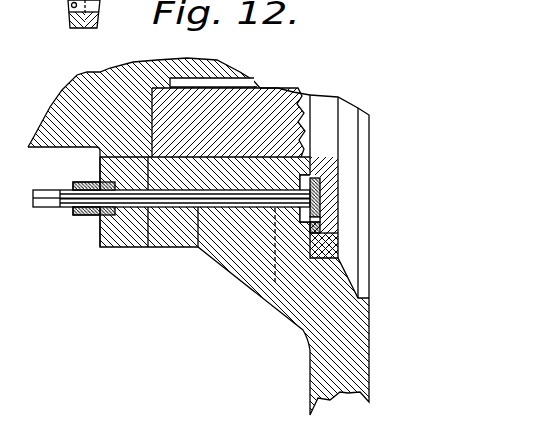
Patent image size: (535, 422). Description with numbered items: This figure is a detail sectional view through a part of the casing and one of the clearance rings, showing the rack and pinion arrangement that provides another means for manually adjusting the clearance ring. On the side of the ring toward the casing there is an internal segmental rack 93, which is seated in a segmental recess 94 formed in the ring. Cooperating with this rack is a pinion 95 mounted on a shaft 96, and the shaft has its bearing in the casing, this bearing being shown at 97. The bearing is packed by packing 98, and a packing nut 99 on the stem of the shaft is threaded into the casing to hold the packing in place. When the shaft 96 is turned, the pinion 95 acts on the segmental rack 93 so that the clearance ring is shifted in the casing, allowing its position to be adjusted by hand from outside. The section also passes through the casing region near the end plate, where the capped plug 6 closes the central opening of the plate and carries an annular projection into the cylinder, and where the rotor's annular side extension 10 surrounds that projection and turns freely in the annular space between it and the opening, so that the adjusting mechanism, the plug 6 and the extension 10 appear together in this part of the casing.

The capped plug 6 is at (100, 80).
The annular side extension 10 is at (290, 81).
The internal segmental rack 93 is at (322, 227).
The segmental recess 94 is at (325, 157).
The pinion 95 is at (322, 182).
The shaft 96 is at (140, 202).
The bearing 97 is at (200, 208).
The packing 98 is at (110, 183).
The packing nut 99 is at (80, 186).